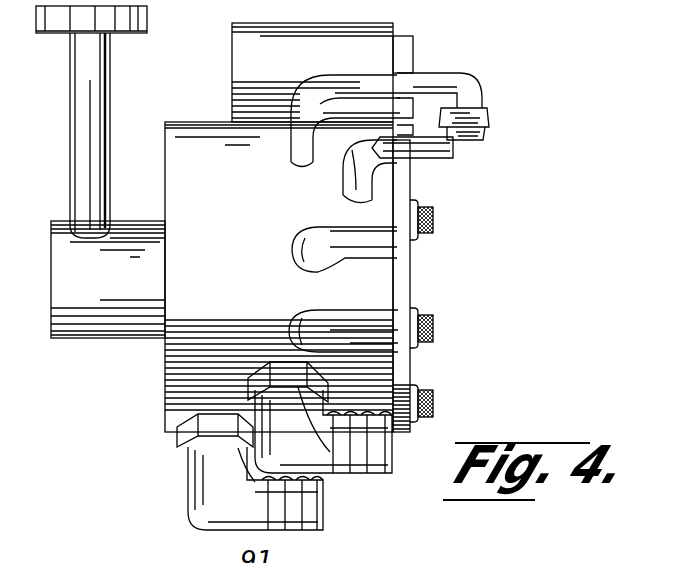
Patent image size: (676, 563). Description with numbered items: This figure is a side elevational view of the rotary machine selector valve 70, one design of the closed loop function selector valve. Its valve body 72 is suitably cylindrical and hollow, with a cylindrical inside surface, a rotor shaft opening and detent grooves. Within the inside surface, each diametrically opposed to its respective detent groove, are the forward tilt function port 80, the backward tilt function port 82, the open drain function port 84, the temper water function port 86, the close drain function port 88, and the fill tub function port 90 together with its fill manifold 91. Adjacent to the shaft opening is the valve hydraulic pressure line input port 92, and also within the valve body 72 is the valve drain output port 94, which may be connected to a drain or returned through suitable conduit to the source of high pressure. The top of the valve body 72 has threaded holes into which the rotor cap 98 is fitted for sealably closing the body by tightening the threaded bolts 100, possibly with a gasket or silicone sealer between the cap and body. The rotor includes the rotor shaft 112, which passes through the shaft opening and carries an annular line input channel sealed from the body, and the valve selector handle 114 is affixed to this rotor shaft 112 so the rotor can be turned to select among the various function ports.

The rotary machine selector valve 70 is at (217, 38).
The valve body 72 is at (257, 182).
The forward tilt function port 80 is at (392, 298).
The backward tilt function port 82 is at (397, 272).
The open drain function port 84 is at (395, 192).
The temper water function port 86 is at (395, 170).
The close drain function port 88 is at (407, 152).
The fill tub function port 90 is at (258, 122).
The fill manifold 91 is at (368, 36).
The valve hydraulic pressure line input port 92 is at (192, 458).
The valve drain output port 94 is at (345, 472).
The rotor cap 98 is at (412, 257).
The threaded bolts 100 is at (433, 330).
The rotor shaft 112 is at (128, 228).
The valve selector handle 114 is at (76, 74).